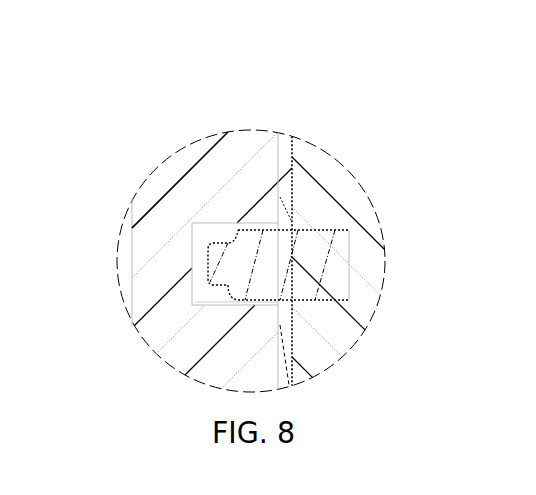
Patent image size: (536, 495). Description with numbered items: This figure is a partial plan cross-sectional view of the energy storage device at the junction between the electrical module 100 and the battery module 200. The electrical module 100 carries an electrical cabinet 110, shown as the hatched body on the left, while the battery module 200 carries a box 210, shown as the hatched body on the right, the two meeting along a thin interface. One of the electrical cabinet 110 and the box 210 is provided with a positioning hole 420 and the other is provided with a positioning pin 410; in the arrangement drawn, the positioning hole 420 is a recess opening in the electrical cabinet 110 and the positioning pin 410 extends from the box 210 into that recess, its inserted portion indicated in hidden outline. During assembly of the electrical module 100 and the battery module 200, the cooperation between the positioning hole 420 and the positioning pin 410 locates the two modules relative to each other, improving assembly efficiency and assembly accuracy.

The electrical module 100 is at (167, 182).
The electrical cabinet 110 is at (218, 165).
The battery module 200 is at (335, 192).
The box 210 is at (307, 160).
The positioning pin 410 is at (270, 270).
The positioning hole 420 is at (207, 299).